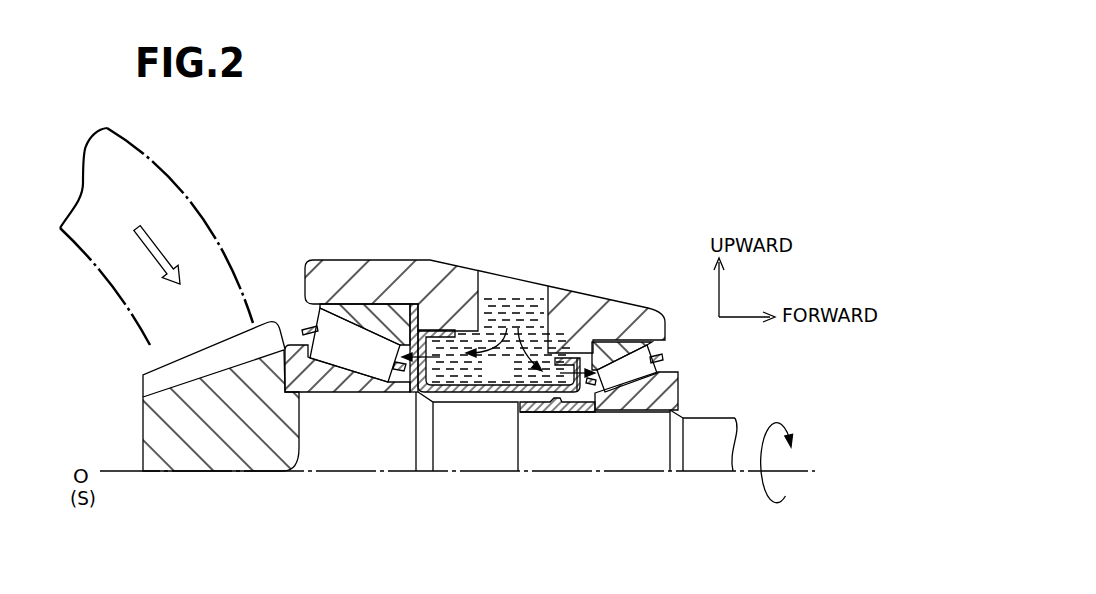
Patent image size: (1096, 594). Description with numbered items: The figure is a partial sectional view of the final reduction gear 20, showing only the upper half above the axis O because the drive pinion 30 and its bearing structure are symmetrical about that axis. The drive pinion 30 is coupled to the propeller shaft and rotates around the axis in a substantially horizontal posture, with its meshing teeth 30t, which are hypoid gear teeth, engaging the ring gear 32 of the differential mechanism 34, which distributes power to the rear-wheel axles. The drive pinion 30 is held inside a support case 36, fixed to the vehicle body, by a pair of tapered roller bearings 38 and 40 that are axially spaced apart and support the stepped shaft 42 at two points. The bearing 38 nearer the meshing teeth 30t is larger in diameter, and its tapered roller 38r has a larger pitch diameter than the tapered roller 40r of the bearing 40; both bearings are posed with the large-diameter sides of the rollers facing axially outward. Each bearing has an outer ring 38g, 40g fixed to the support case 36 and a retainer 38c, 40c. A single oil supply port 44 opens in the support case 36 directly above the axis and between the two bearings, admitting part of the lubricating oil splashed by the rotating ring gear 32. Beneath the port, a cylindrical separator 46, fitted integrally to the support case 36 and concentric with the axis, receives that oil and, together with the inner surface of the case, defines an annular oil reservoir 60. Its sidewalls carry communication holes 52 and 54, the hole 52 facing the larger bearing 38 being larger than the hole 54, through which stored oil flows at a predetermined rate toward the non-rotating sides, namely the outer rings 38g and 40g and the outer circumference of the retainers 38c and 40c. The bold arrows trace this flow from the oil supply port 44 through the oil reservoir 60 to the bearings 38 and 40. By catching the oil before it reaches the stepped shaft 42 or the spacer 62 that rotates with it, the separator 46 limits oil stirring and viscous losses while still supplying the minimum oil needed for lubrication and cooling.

The final reduction gear 20 is at (643, 163).
The drive pinion 30 is at (269, 519).
The meshing teeth 30t is at (190, 370).
The ring gear 32 is at (173, 215).
The differential mechanism 34 is at (230, 129).
The support case 36 is at (399, 276).
The bearing 38 is at (290, 309).
The outer ring 38g is at (360, 318).
The tapered roller 38r is at (350, 352).
The retainer 38c is at (400, 384).
The bearing 40 is at (676, 349).
The outer ring 40g is at (613, 343).
The tapered roller 40r is at (634, 373).
The retainer 40c is at (605, 384).
The stepped shaft 42 is at (572, 455).
The oil supply port 44 is at (515, 293).
The separator 46 is at (463, 410).
The communication hole 52 is at (430, 330).
The communication hole 54 is at (578, 380).
The oil reservoir 60 is at (510, 381).
The spacer 62 is at (537, 414).